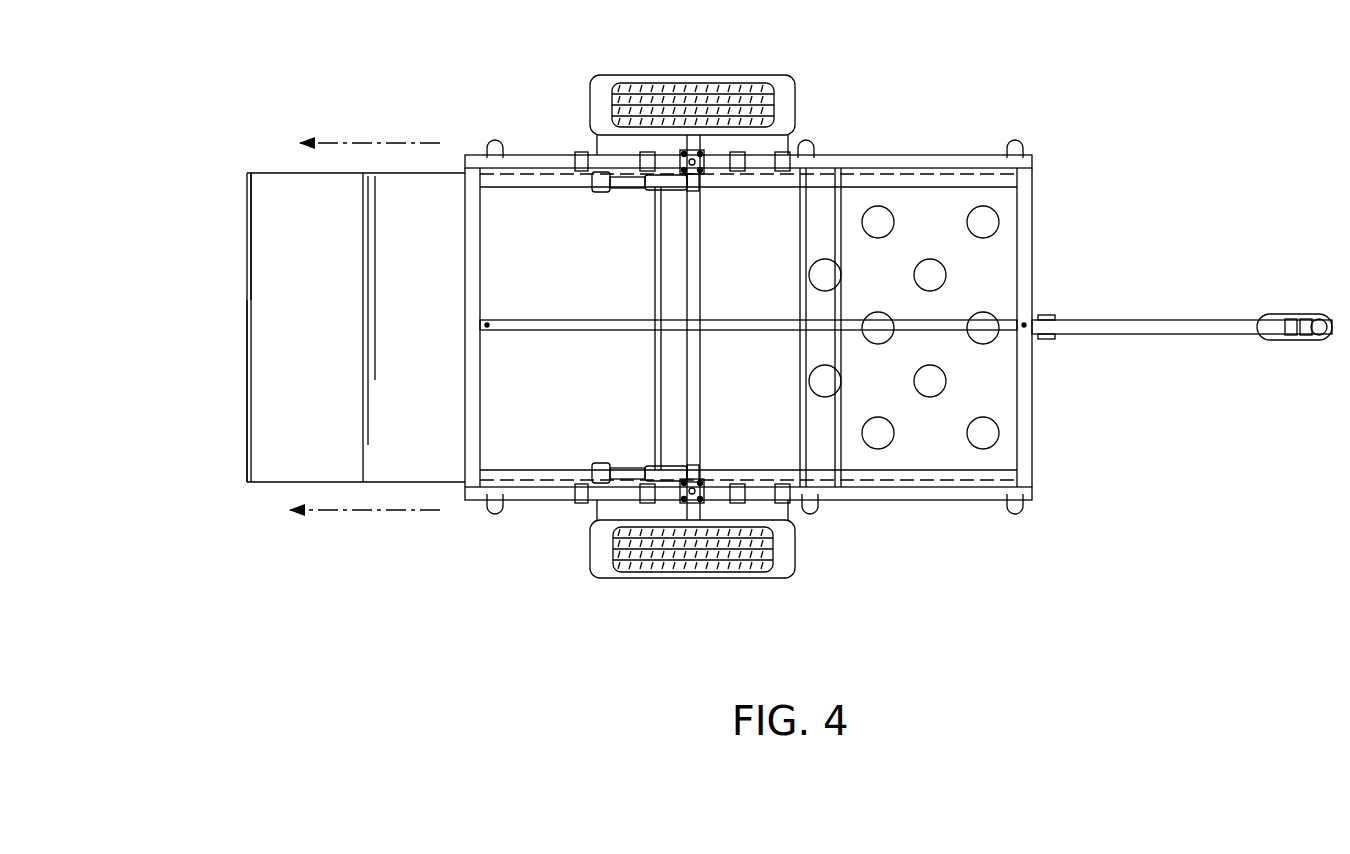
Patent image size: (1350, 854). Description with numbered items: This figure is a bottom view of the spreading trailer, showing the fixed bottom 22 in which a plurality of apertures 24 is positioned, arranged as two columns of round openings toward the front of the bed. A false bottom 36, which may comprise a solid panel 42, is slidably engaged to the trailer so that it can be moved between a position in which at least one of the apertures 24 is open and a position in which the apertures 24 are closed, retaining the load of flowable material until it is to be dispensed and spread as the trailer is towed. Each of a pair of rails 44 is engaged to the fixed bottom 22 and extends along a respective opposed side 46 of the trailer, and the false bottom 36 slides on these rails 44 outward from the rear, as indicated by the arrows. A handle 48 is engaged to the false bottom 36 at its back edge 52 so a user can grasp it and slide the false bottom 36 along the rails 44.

The fixed bottom 22 is at (932, 203).
The apertures 24 is at (893, 222).
The false bottom 36 is at (402, 214).
The solid panel 42 is at (549, 249).
The rails 44 is at (502, 186).
The opposed side 46 is at (805, 170).
The handle 48 is at (246, 378).
The back edge 52 is at (250, 252).